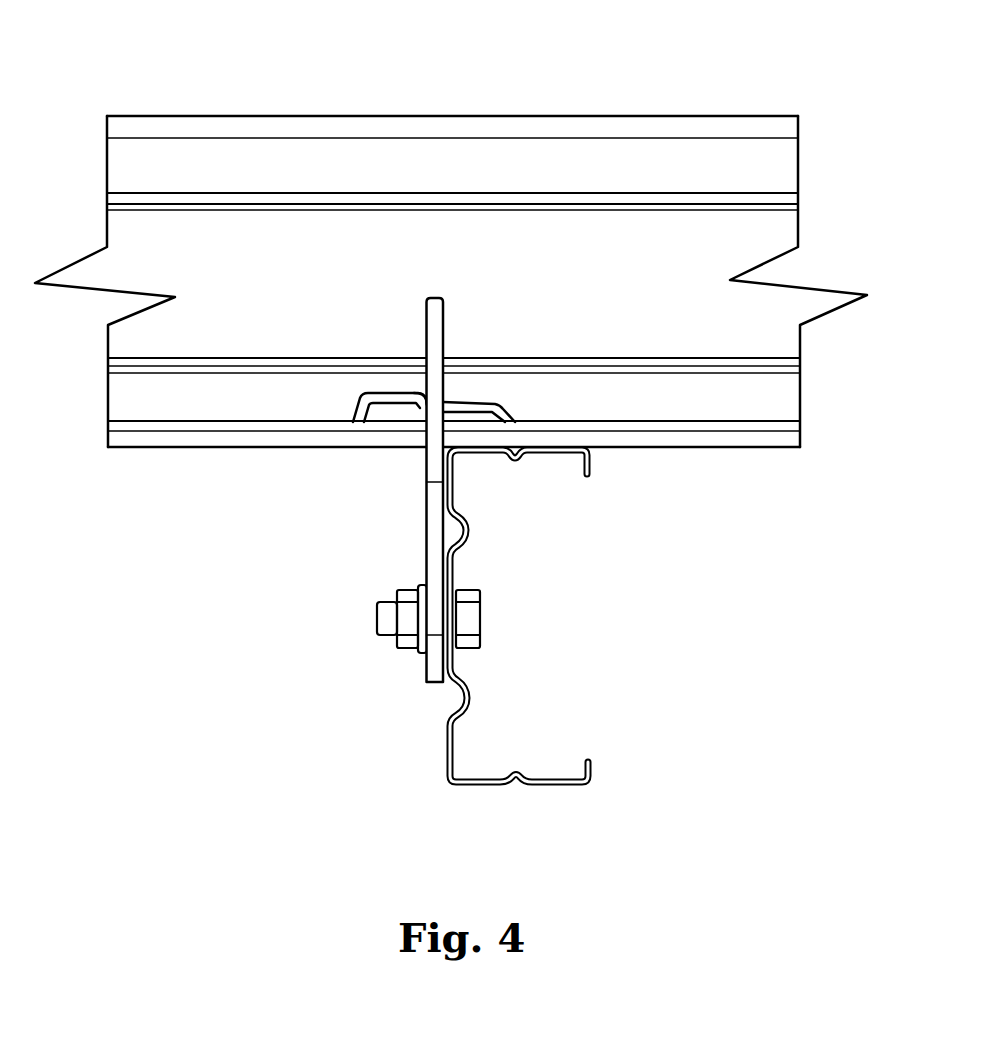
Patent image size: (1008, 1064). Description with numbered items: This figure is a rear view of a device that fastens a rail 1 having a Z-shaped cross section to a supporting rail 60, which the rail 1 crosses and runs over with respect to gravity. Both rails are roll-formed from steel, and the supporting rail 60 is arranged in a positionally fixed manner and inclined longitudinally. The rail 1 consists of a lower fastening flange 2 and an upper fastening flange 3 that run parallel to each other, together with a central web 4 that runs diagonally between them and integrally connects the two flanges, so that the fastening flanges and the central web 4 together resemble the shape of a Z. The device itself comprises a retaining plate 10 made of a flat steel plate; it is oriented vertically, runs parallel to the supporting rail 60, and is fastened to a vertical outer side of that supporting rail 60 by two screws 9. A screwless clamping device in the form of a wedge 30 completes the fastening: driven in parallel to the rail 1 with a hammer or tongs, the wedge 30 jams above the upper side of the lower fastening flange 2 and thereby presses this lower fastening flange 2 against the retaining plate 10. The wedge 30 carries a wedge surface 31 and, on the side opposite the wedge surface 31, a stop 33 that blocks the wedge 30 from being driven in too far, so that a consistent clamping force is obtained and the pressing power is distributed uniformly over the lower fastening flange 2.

The rail 1 is at (697, 89).
The lower fastening flange 2 is at (223, 448).
The upper fastening flange 3 is at (228, 115).
The central web 4 is at (299, 299).
The screws 9 is at (483, 608).
The retaining plate 10 is at (427, 523).
The wedge 30 is at (391, 408).
The wedge surface 31 is at (468, 399).
The stop 33 is at (420, 396).
The supporting rail 60 is at (557, 703).